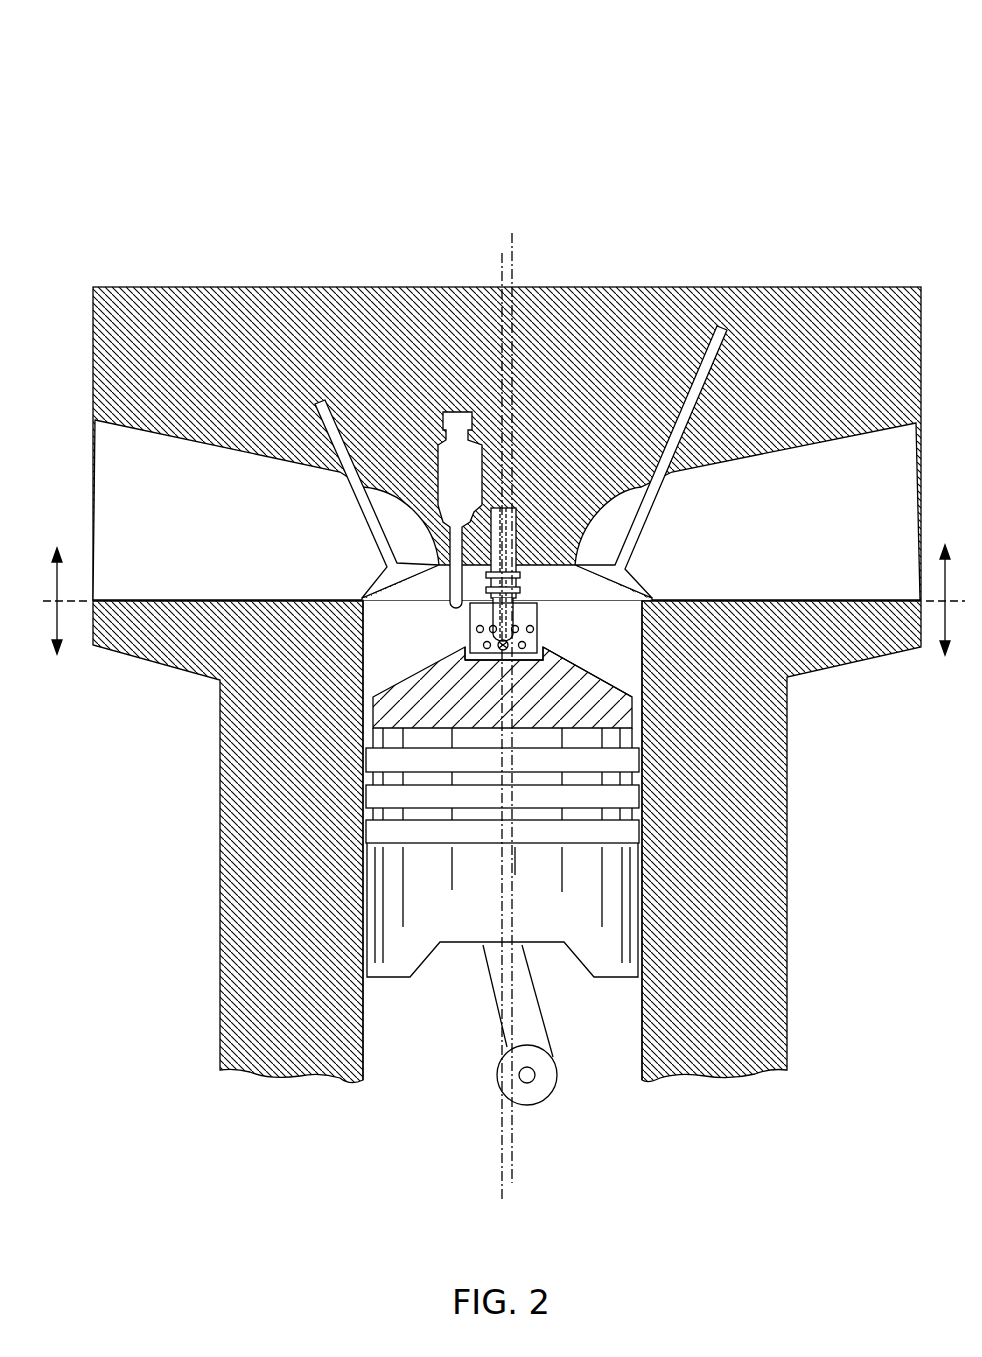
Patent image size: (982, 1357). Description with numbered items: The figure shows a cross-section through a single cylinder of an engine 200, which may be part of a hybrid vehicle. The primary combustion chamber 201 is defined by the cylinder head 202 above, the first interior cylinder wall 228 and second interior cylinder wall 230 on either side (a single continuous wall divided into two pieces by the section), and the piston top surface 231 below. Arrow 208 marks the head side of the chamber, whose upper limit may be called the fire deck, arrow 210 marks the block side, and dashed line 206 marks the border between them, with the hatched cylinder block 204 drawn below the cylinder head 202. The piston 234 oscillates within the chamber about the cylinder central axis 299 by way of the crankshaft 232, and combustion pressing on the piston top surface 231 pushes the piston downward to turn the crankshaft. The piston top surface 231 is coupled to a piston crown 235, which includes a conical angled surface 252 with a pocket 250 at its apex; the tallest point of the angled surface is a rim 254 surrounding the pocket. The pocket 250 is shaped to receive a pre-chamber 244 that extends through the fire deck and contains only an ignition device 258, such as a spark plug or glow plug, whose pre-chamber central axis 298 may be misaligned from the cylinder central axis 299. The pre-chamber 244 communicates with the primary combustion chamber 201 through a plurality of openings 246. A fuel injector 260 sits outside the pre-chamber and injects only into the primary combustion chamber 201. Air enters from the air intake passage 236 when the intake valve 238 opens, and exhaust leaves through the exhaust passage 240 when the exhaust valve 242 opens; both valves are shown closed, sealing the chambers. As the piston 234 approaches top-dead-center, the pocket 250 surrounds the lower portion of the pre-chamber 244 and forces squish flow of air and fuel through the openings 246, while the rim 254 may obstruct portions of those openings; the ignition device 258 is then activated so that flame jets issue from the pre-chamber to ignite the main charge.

The engine 200 is at (842, 25).
The primary combustion chamber 201 is at (398, 642).
The cylinder head 202 is at (177, 287).
The cylinder block 204 is at (216, 840).
The dashed line 206 is at (78, 602).
The arrow 208 is at (62, 597).
The arrow 210 is at (62, 613).
The first interior cylinder wall 228 is at (367, 1062).
The second interior cylinder wall 230 is at (642, 1062).
The piston top surface 231 is at (646, 727).
The crankshaft 232 is at (498, 1080).
The piston 234 is at (467, 937).
The piston crown 235 is at (578, 672).
The air intake passage 236 is at (828, 542).
The intake valve 238 is at (645, 533).
The exhaust passage 240 is at (257, 535).
The exhaust valve 242 is at (348, 490).
The pre-chamber 244 is at (537, 603).
The plurality of openings 246 is at (533, 629).
The pocket 250 is at (465, 655).
The angled surface 252 is at (417, 676).
The rim 254 is at (544, 648).
The ignition device 258 is at (518, 508).
The fuel injector 260 is at (445, 411).
The pre-chamber central axis 298 is at (500, 1170).
The cylinder central axis 299 is at (516, 1148).